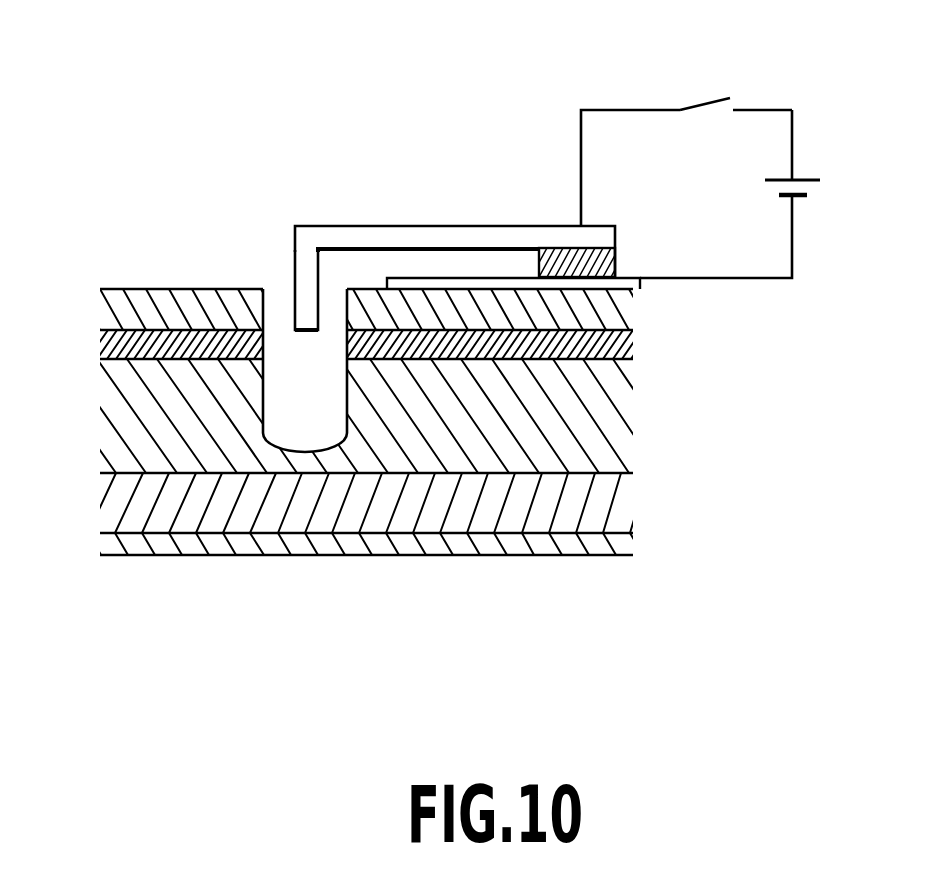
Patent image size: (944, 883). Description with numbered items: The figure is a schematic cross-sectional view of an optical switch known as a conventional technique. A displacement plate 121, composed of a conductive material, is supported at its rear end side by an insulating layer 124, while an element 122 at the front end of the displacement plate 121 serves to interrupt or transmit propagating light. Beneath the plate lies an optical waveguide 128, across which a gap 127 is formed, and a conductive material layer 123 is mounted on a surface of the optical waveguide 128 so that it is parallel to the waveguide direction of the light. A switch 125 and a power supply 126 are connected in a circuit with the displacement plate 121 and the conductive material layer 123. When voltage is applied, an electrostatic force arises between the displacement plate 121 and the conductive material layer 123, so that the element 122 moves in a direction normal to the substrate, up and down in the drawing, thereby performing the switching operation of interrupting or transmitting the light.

The displacement plate 121 is at (389, 226).
The element 122 is at (295, 262).
The conductive material layer 123 is at (641, 290).
The insulating layer 124 is at (562, 248).
The switch 125 is at (697, 103).
The power supply 126 is at (818, 190).
The gap 127 is at (302, 437).
The optical waveguide 128 is at (103, 413).